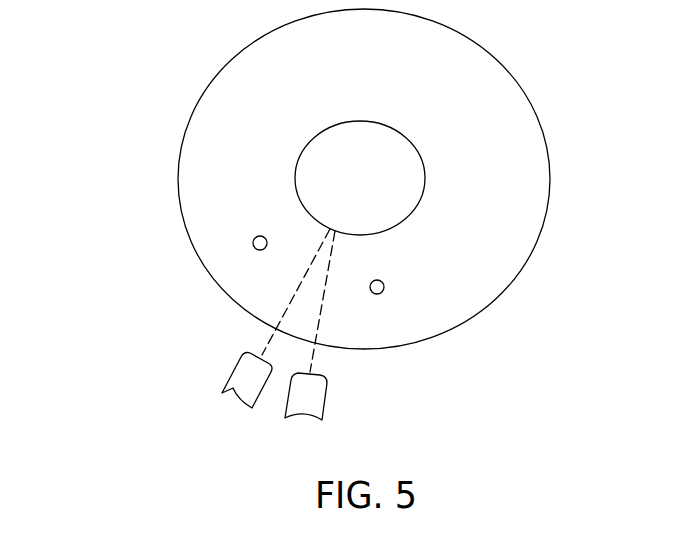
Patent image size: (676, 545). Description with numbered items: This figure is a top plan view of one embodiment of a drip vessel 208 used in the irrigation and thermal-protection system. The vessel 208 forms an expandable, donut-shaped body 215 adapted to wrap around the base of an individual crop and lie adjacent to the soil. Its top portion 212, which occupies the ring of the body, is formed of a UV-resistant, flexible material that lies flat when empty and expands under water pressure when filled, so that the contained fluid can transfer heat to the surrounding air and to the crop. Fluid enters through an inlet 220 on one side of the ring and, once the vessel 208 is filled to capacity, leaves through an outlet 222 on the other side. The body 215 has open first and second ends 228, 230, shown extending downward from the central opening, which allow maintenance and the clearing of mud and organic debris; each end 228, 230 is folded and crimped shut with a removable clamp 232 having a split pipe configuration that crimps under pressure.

The drip vessel 208 is at (128, 145).
The top portion 212 is at (378, 74).
The donut-shaped body 215 is at (233, 100).
The inlet 220 is at (253, 245).
The outlet 222 is at (383, 291).
The first end 228 is at (276, 328).
The second end 230 is at (321, 312).
The removable clamp 232 is at (222, 393).